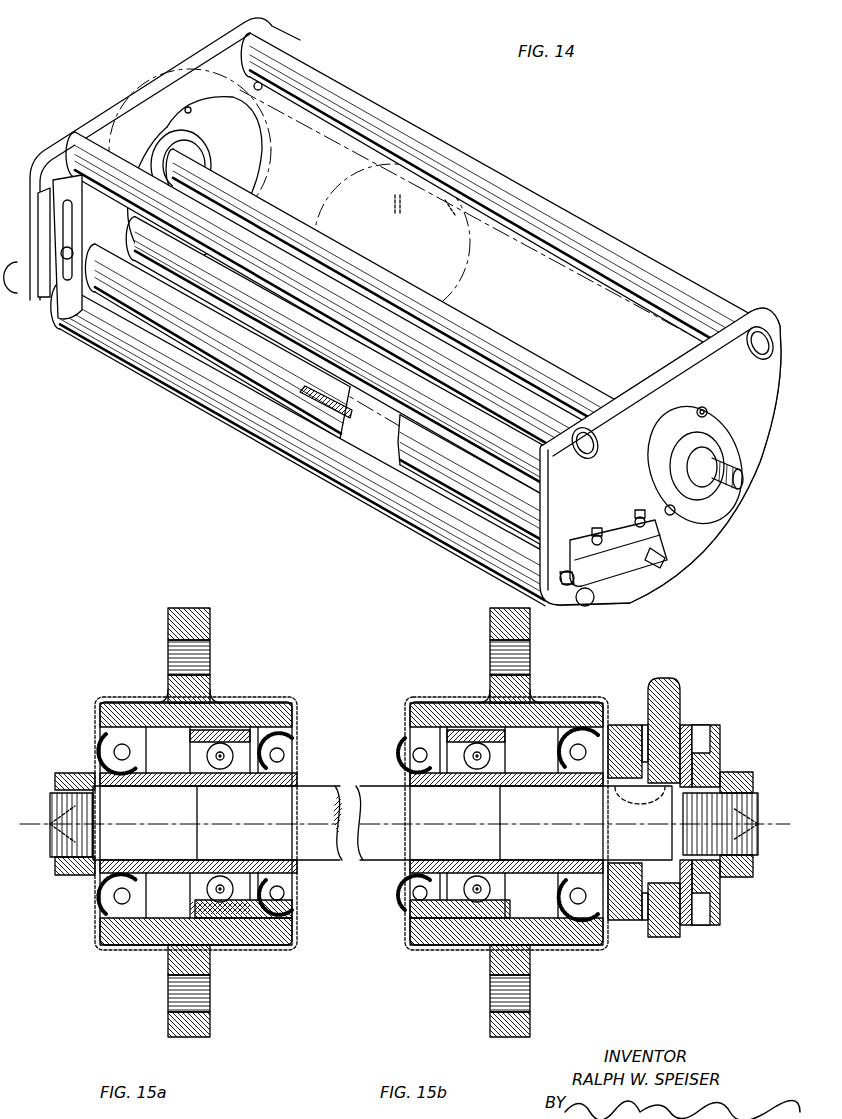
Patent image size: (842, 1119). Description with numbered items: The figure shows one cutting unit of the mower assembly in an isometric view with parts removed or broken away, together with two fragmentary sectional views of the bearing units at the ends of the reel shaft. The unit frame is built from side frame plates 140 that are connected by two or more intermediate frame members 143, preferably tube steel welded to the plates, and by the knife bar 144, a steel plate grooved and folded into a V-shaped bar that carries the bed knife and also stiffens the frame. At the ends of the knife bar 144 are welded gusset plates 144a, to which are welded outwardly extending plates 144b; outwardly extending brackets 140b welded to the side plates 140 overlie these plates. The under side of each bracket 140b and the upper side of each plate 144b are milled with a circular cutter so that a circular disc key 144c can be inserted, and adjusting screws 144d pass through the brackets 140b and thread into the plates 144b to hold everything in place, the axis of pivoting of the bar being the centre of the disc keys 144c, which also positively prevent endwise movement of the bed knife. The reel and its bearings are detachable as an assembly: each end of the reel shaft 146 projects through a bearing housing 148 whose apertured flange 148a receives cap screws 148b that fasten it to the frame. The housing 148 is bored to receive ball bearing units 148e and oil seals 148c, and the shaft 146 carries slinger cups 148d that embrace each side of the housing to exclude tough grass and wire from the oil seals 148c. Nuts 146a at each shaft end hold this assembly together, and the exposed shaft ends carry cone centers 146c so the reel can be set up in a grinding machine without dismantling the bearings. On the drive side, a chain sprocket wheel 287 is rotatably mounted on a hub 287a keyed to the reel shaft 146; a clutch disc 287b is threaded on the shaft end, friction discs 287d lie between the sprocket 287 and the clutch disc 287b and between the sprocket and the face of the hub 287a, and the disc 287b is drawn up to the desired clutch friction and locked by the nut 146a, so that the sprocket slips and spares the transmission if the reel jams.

In FIG. 14, the side frame plate 140 is at (164, 68).
In FIG. 14, the outwardly extending bracket 140b is at (665, 556).
In FIG. 14, the intermediate frame member 143 is at (516, 182).
In FIG. 14, the knife bar 144 is at (438, 452).
In FIG. 14, the gusset plate 144a is at (58, 318).
In FIG. 14, the outwardly extending plate 144b is at (657, 572).
In FIG. 14, the circular disc key 144c is at (622, 572).
In FIG. 14, the adjusting screw 144d is at (600, 528).
In FIG. 15B, the reel shaft 146 is at (385, 858).
In FIG. 15A, the nut 146a is at (60, 878).
In FIG. 15B, the nut 146a is at (742, 877).
In FIG. 15A, the cone center 146c is at (50, 838).
In FIG. 15B, the cone center 146c is at (760, 850).
In FIG. 15A, the bearing housing 148 is at (212, 692).
In FIG. 15B, the bearing housing 148 is at (492, 684).
In FIG. 15A, the apertured flange 148a is at (211, 612).
In FIG. 14, the cap screw 148b is at (650, 478).
In FIG. 15A, the oil seal 148c is at (276, 878).
In FIG. 15B, the oil seal 148c is at (444, 878).
In FIG. 15A, the slinger cup 148d is at (100, 700).
In FIG. 15B, the slinger cup 148d is at (412, 700).
In FIG. 15A, the ball bearing unit 148e is at (220, 876).
In FIG. 15B, the ball bearing unit 148e is at (488, 876).
In FIG. 15B, the chain sprocket wheel 287 is at (676, 680).
In FIG. 15B, the hub 287a is at (622, 722).
In FIG. 15B, the clutch disc 287b is at (718, 724).
In FIG. 15B, the friction disc 287d is at (646, 720).